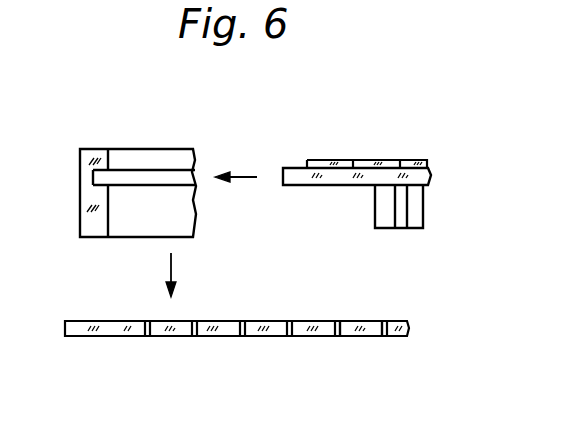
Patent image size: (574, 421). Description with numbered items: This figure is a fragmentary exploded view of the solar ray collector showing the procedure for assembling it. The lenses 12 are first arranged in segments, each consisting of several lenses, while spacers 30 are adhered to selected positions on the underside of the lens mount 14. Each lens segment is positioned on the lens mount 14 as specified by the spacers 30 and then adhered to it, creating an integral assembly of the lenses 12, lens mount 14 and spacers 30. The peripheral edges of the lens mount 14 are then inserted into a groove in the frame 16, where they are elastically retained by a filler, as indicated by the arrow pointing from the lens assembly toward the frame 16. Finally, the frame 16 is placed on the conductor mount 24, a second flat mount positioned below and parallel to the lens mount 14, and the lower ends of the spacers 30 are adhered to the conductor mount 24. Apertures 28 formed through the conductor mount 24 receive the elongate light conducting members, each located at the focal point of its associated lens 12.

The frame 16 is at (100, 148).
The lens mount 14 is at (295, 173).
The lens 12 is at (328, 165).
The spacer 30 is at (424, 217).
The aperture 28 is at (241, 318).
The conductor mount 24 is at (372, 320).